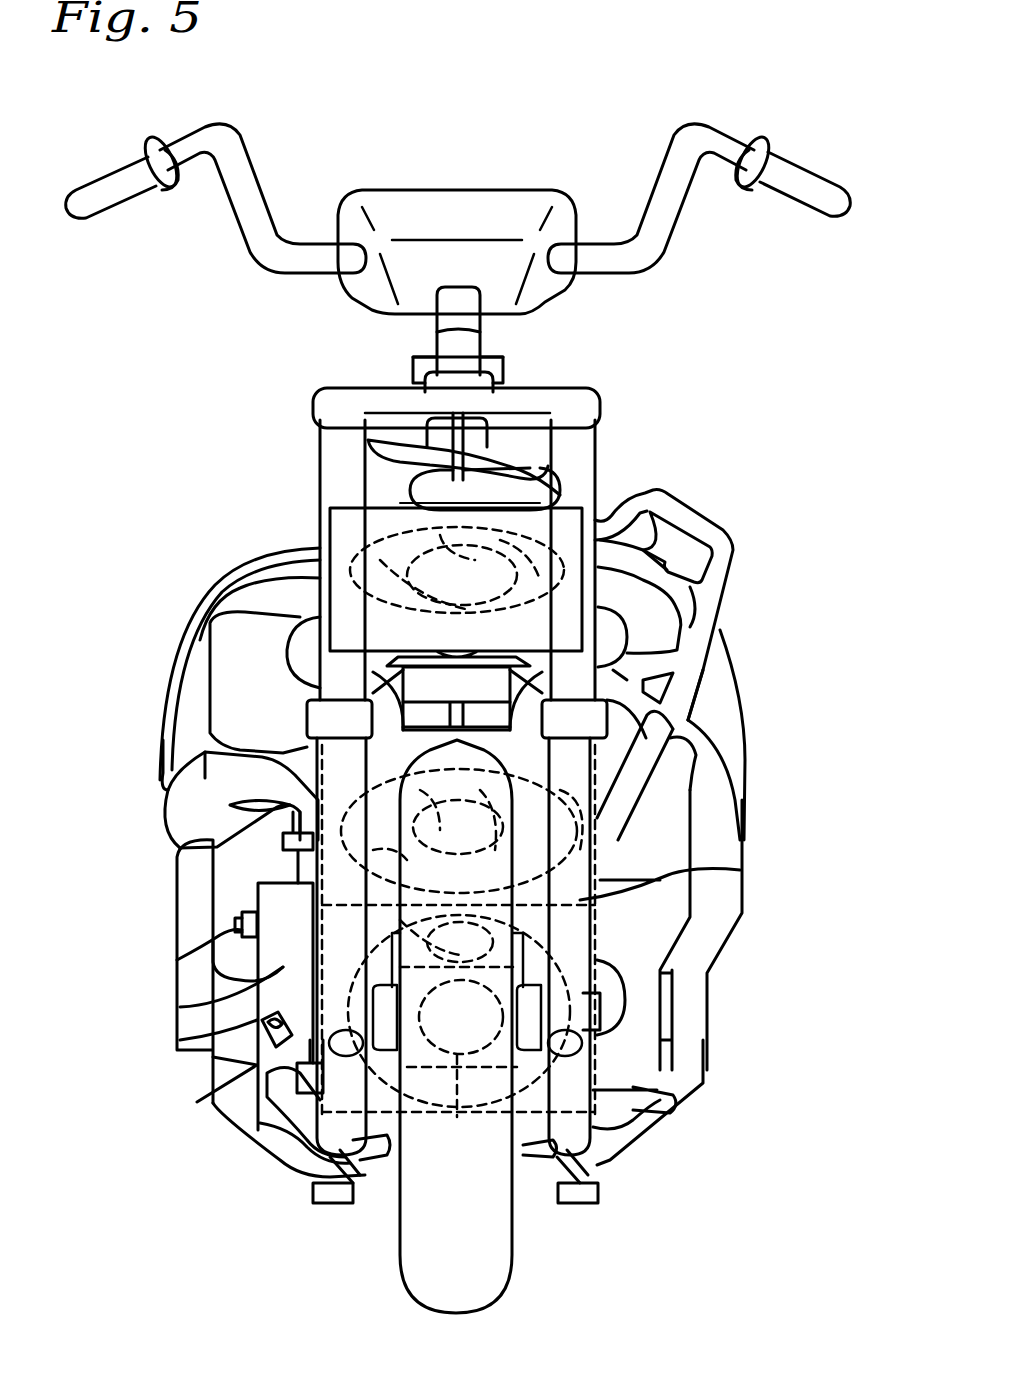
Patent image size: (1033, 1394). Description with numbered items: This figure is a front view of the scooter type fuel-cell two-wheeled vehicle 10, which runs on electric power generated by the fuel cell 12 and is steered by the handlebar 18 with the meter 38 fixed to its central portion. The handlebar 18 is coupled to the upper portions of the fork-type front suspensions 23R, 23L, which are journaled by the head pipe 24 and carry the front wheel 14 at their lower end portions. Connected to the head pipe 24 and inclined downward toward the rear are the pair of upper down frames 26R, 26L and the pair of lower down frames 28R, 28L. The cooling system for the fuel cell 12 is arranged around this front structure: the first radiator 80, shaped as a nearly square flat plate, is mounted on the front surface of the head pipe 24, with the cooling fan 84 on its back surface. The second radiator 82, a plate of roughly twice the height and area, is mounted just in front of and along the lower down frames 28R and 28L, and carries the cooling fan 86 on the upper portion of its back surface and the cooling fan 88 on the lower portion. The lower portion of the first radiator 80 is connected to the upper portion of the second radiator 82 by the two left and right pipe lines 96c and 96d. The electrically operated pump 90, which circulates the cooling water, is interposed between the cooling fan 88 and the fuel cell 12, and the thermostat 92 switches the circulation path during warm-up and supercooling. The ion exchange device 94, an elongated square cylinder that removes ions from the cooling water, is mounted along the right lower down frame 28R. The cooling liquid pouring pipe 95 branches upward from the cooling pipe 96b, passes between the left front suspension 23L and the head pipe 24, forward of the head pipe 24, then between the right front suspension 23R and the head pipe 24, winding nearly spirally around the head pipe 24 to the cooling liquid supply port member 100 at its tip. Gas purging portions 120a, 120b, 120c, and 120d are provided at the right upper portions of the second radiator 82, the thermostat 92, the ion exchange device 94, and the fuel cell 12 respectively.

The fuel-cell two-wheeled vehicle 10 is at (556, 110).
The fuel cell 12 is at (283, 967).
The front wheel 14 is at (430, 1272).
The handlebar 18 is at (608, 254).
The left front suspension 23L is at (640, 882).
The right front suspension 23R is at (345, 937).
The head pipe 24 is at (482, 431).
The left upper down frame 26L is at (667, 573).
The right upper down frame 26R is at (252, 560).
The left lower down frame 28L is at (720, 818).
The right lower down frame 28R is at (190, 923).
The meter 38 is at (480, 208).
The first radiator 80 is at (646, 505).
The second radiator 82 is at (615, 816).
The cooling fan 84 is at (360, 560).
The cooling fan 86 is at (600, 852).
The cooling fan 88 is at (617, 958).
The electrically operated pump 90 is at (445, 1092).
The thermostat 92 is at (267, 1076).
The ion exchange device 94 is at (292, 857).
The cooling liquid pouring pipe 95 is at (548, 466).
The cooling pipe 96b is at (566, 497).
The pipe line 96c is at (290, 661).
The pipe line 96d is at (611, 633).
The cooling liquid supply port member 100 is at (497, 363).
The gas purging portion 120a is at (322, 762).
The gas purging portion 120b is at (257, 1020).
The gas purging portion 120c is at (192, 858).
The gas purging portion 120d is at (217, 933).